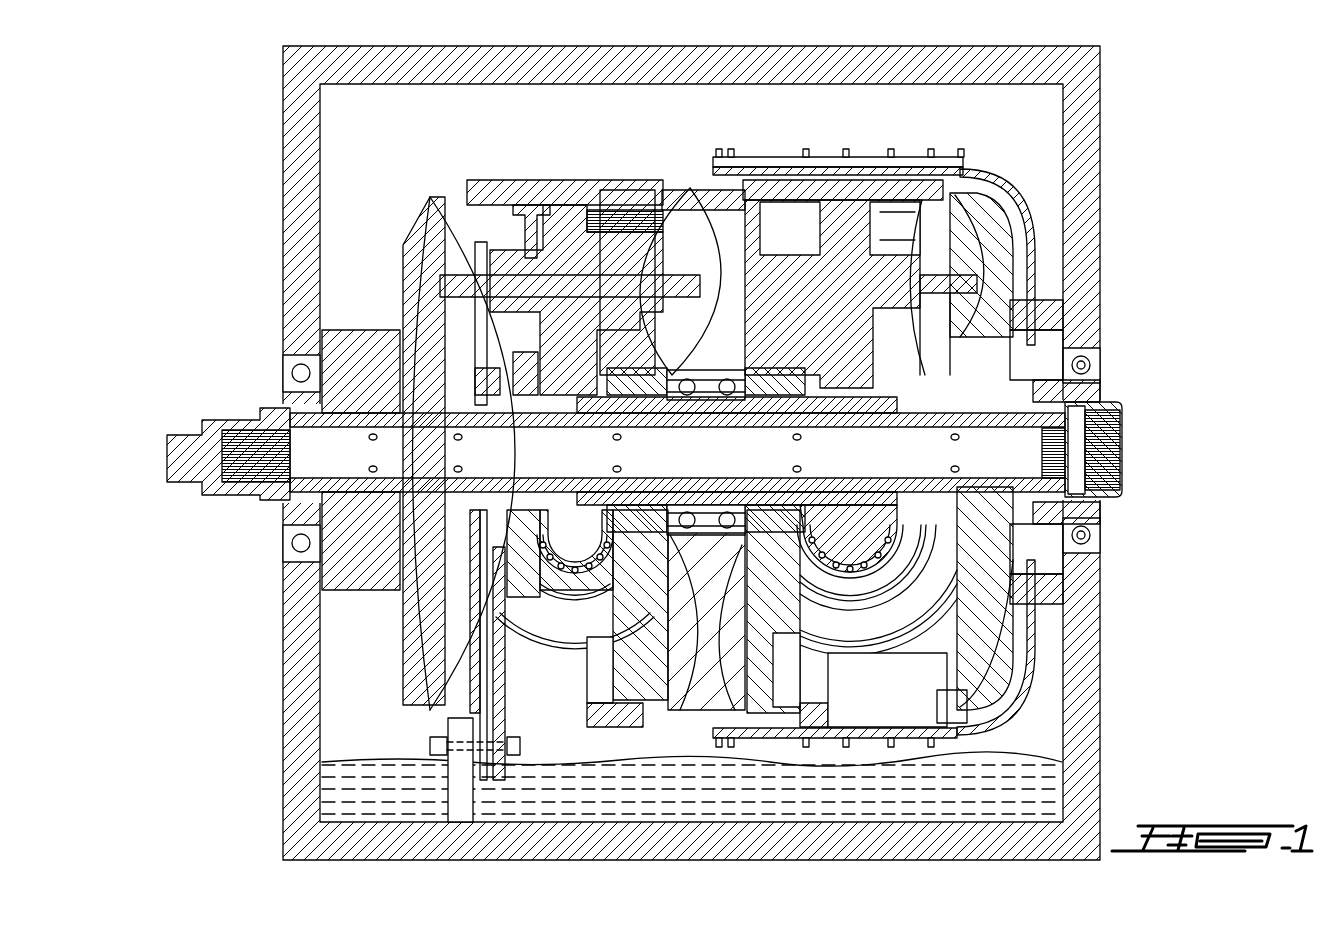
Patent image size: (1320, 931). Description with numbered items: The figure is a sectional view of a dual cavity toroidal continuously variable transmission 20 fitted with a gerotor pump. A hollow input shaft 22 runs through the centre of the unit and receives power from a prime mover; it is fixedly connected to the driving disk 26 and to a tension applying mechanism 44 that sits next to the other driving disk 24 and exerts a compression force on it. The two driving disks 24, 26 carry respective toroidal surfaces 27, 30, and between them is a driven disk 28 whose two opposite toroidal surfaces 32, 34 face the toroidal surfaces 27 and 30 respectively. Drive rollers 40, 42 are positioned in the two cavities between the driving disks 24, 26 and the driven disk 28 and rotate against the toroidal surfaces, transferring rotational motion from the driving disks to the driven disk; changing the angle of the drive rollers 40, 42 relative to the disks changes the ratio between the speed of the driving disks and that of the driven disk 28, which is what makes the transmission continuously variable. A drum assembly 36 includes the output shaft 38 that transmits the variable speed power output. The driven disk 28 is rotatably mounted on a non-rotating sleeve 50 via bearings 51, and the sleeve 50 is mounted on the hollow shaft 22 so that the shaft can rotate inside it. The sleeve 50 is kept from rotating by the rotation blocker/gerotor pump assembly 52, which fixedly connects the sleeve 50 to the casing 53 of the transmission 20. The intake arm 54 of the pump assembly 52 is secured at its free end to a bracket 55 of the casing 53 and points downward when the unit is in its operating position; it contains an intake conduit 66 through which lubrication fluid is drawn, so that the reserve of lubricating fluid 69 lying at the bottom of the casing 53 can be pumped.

The toroidal continuously variable transmission 20 is at (1195, 203).
The hollow input shaft 22 is at (285, 440).
The driving disk 24 is at (440, 205).
The driving disk 26 is at (990, 205).
The toroidal surface 27 is at (450, 248).
The driven disk 28 is at (700, 215).
The toroidal surface 30 is at (965, 253).
The toroidal surface 32 is at (642, 232).
The toroidal surface 34 is at (760, 250).
The drum assembly 36 is at (862, 163).
The output shaft 38 is at (1115, 398).
The drive roller 40 is at (520, 245).
The drive roller 42 is at (900, 240).
The tension applying mechanism 44 is at (343, 328).
The non-rotating sleeve 50 is at (605, 560).
The bearings 51 is at (1030, 542).
The rotation blocker/gerotor pump assembly 52 is at (468, 748).
The casing 53 is at (1088, 680).
The intake arm 54 is at (505, 726).
The bracket 55 is at (448, 727).
The intake conduit 66 is at (490, 688).
The reserve of lubricating fluid 69 is at (985, 793).